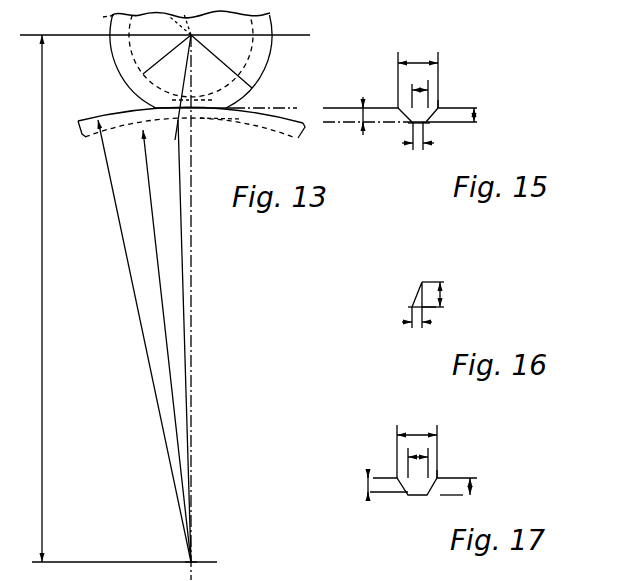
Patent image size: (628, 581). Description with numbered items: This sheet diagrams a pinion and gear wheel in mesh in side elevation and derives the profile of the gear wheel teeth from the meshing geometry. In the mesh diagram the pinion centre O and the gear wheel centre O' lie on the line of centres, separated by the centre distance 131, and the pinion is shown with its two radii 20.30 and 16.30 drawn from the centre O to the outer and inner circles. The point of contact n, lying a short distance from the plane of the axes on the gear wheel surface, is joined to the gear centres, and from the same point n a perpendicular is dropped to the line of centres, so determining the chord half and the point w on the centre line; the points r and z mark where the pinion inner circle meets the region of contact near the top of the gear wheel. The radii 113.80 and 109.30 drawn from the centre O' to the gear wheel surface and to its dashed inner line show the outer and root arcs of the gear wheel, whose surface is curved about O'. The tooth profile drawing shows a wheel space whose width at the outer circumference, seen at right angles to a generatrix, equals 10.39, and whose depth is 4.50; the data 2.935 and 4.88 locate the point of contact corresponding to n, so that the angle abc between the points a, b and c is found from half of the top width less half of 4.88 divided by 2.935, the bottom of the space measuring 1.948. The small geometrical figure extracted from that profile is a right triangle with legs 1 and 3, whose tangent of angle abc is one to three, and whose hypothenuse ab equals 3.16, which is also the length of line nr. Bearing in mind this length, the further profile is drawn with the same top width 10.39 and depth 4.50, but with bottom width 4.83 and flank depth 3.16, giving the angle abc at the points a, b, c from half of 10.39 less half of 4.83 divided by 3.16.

In FIG. 13, the pinion centre O is at (165, 295).
In FIG. 13, the gear wheel centre O' is at (196, 554).
In FIG. 13, the point r is at (176, 100).
In FIG. 13, the point on pinion root circle z is at (204, 100).
In FIG. 13, the point on rack dedendum line w is at (215, 116).
In FIG. 13, the point of contact n is at (191, 298).
In FIG. 15, the point a is at (400, 109).
In FIG. 16, the point a is at (418, 308).
In FIG. 17, the point a is at (423, 480).
In FIG. 15, the point b is at (423, 126).
In FIG. 16, the point b is at (421, 288).
In FIG. 17, the point b is at (446, 499).
In FIG. 15, the point c is at (442, 103).
In FIG. 16, the point c is at (433, 314).
In FIG. 17, the point c is at (443, 471).
In FIG. 13, the pinion root radius dimension 16.30 is at (164, 52).
In FIG. 13, the pinion outer radius dimension 20.30 is at (221, 61).
In FIG. 13, the distance between centres 131 is at (121, 298).
In FIG. 13, the rack surface radius 113.80 is at (144, 341).
In FIG. 13, the rack dedendum radius 109.30 is at (164, 346).
In FIG. 15, the width of wheel space at outer circumference 10.39 is at (418, 79).
In FIG. 17, the width of wheel space at outer circumference 10.39 is at (417, 450).
In FIG. 15, the bottom width of wheel space 4.88 is at (435, 93).
In FIG. 15, the tooth depth 4.50 is at (489, 116).
In FIG. 17, the tooth depth 4.50 is at (484, 486).
In FIG. 15, the depth to point of contact 2.935 is at (345, 116).
In FIG. 15, the tooth bottom flat width 1.948 is at (435, 136).
In FIG. 16, the side of length three 3 is at (433, 294).
In FIG. 16, the side of length one 1 is at (417, 317).
In FIG. 17, the bottom width of wheel space 4.83 is at (421, 462).
In FIG. 17, the length of line nr 3.16 is at (357, 485).